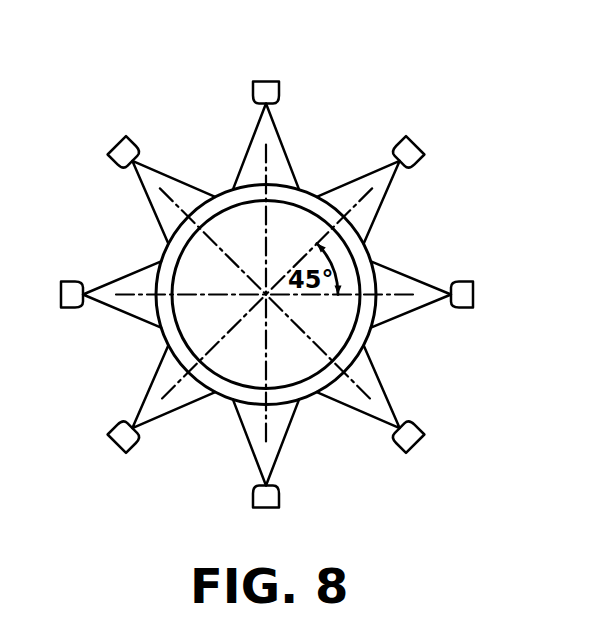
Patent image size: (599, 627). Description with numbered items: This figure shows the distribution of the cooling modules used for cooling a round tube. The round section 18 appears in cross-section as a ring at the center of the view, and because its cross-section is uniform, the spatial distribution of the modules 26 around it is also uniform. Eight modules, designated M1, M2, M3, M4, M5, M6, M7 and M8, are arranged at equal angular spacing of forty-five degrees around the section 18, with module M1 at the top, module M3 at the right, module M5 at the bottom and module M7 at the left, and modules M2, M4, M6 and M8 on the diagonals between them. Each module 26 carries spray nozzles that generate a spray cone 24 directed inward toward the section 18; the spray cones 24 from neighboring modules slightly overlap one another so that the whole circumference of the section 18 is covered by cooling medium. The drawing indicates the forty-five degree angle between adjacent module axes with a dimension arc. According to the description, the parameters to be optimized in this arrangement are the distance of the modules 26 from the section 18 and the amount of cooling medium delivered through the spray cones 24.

The section 18 is at (368, 247).
The spray cone 24 is at (363, 373).
The module 26 is at (412, 428).
The module M1 is at (266, 120).
The module M2 is at (385, 181).
The module M3 is at (445, 294).
The module M4 is at (422, 397).
The module M5 is at (266, 468).
The module M6 is at (147, 408).
The module M7 is at (90, 294).
The module M8 is at (150, 176).